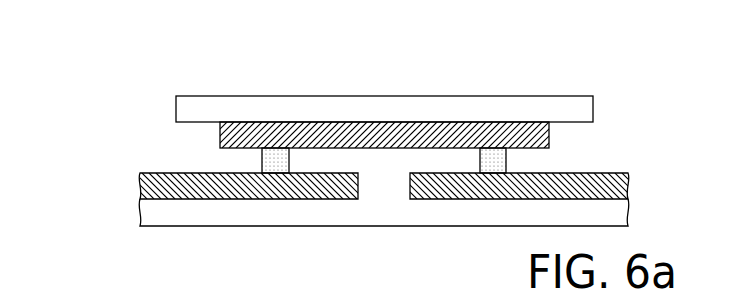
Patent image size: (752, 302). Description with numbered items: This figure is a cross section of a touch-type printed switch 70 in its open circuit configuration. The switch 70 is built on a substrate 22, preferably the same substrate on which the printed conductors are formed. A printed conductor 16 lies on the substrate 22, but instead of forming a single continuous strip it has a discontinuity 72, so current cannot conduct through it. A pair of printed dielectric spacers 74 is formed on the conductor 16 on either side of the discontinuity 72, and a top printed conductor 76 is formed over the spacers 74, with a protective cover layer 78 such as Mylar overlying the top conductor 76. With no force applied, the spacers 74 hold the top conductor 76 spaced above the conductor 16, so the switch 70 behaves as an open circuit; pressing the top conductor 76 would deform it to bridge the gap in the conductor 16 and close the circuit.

The touch switch 70 is at (556, 61).
The discontinuity 72 is at (380, 188).
The printed dielectric spacers 74 is at (263, 160).
The top printed conductor 76 is at (319, 128).
The protective cover layer 78 is at (377, 108).
The printed conductor 16 is at (140, 185).
The substrate 22 is at (150, 212).